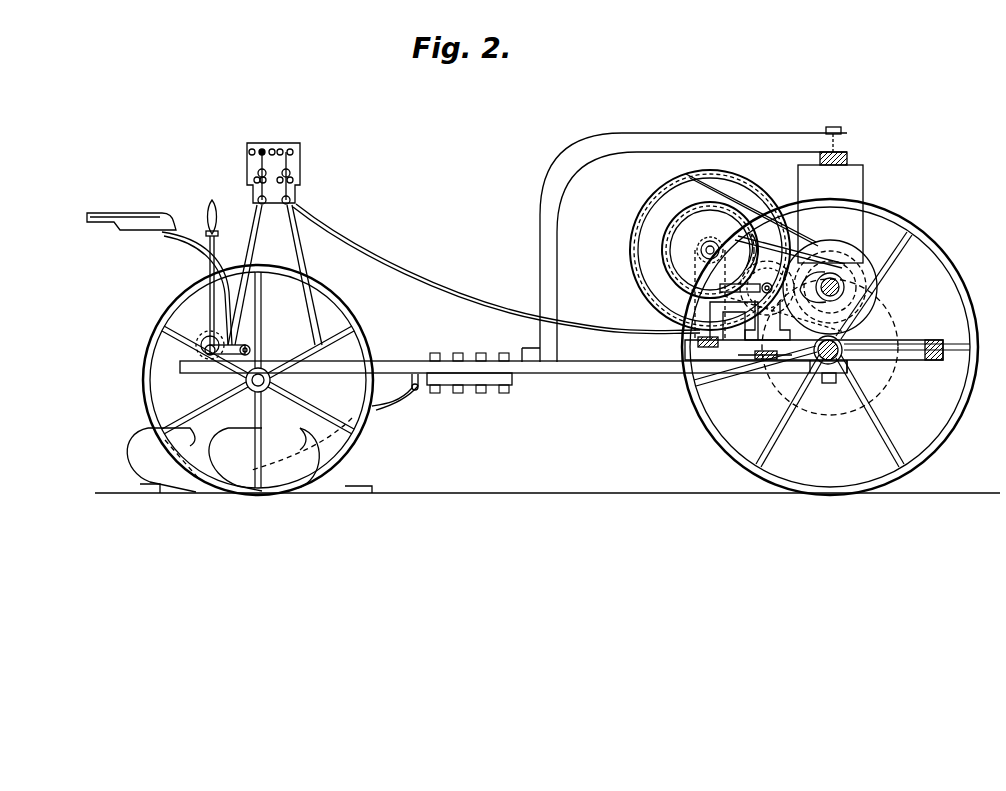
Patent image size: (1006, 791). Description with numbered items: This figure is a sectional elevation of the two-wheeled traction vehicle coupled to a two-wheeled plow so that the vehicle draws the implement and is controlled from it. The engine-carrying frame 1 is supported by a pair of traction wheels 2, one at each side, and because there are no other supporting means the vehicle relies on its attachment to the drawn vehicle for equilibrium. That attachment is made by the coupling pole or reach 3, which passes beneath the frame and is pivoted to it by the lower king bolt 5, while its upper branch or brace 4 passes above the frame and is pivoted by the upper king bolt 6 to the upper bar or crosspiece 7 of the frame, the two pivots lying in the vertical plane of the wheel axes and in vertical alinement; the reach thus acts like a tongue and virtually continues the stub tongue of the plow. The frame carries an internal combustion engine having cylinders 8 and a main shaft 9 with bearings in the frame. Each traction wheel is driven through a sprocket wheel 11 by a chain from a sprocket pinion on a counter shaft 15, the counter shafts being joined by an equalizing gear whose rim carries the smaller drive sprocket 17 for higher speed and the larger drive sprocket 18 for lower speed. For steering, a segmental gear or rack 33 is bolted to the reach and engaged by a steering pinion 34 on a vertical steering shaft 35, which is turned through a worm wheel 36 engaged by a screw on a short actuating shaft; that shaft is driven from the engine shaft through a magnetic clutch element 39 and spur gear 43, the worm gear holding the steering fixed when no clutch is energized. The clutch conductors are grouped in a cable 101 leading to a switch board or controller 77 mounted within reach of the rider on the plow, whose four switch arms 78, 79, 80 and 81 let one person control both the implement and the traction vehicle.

The engine-carrying frame 1 is at (912, 342).
The traction wheels 2 is at (925, 240).
The coupling pole or reach 3 is at (633, 370).
The upper branch or brace 4 is at (677, 140).
The lower king bolt 5 is at (830, 385).
The upper king bolt 6 is at (834, 127).
The upper bar or crosspiece 7 is at (850, 150).
The cylinders 8 is at (847, 186).
The main shaft 9 is at (843, 300).
The sprocket wheels 11 is at (870, 375).
The counter shaft 15 is at (703, 253).
The smaller drive sprocket 17 is at (680, 240).
The larger drive sprocket 18 is at (663, 210).
The segmental gear or rack 33 is at (755, 362).
The steering pinion 34 is at (752, 318).
The vertical steering shaft 35 is at (740, 325).
The worm wheel 36 is at (745, 292).
The magnetic clutch element 39 is at (876, 292).
The spur gear 43 is at (743, 258).
The switch board or controller 77 is at (298, 162).
The switch arm 78 is at (260, 163).
The switch arm 79 is at (300, 168).
The switch arm 80 is at (262, 197).
The switch arm 81 is at (298, 193).
The cable 101 is at (374, 262).